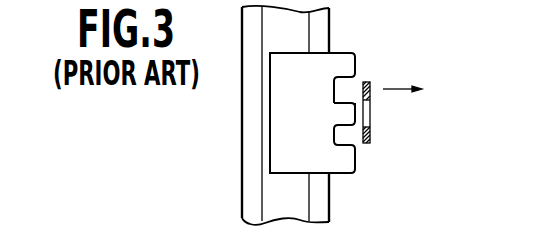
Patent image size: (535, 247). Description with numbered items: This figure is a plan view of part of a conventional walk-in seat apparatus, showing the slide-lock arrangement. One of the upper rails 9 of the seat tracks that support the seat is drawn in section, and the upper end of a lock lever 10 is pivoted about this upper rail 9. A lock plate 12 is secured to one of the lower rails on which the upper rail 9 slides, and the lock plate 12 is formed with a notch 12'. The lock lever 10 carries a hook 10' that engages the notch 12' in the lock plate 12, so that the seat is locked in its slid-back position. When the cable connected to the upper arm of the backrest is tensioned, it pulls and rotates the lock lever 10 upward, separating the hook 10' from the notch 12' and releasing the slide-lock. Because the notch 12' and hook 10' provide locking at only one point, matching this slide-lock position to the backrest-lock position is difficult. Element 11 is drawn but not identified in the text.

The upper rail 9 is at (255, 143).
The second wall 11 is at (280, 197).
The lock plate 12 is at (371, 140).
The notch 12' is at (403, 147).
The lock lever 10 is at (418, 112).
The hook 10' is at (418, 143).